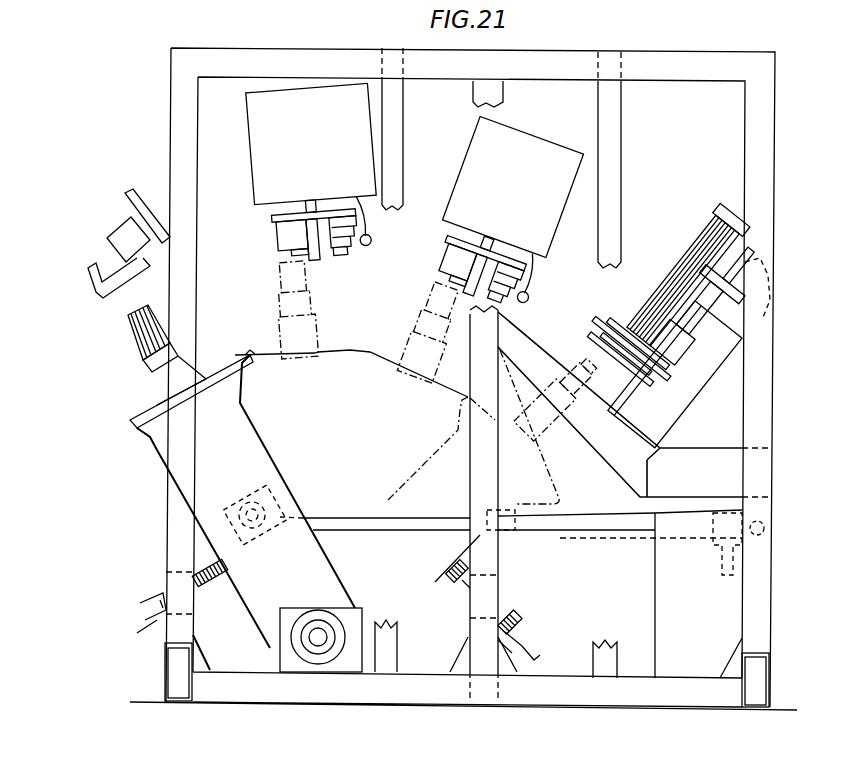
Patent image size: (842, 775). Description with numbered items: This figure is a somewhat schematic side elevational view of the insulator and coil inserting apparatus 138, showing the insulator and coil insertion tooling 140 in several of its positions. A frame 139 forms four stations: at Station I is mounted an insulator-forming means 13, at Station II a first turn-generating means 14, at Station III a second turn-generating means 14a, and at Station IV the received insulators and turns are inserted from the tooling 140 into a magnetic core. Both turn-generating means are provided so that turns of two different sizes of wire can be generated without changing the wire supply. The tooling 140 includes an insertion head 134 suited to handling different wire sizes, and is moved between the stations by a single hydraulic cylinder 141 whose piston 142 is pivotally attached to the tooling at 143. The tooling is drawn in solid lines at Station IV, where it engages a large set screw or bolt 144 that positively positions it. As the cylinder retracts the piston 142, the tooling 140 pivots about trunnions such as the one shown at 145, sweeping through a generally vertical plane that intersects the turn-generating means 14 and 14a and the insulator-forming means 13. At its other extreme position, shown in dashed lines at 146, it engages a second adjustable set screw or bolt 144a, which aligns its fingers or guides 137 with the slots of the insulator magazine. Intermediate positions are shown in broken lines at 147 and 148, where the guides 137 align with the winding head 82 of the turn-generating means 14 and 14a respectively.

The insulator-forming means 13 is at (727, 252).
The first turn-generating means 14 is at (434, 220).
The second turn-generating means 14a is at (350, 263).
The winding head 82 is at (310, 250).
The insertion head 134 is at (135, 340).
The fingers or guides 137 is at (152, 313).
The insulator and coil inserting apparatus 138 is at (263, 33).
The frame 139 is at (171, 108).
The insulator and coil insertion tooling 140 is at (146, 403).
The hydraulic cylinder 141 is at (592, 540).
The piston 142 is at (349, 518).
The pivotal attachment 143 is at (283, 497).
The set screw or bolt 144 is at (212, 584).
The second adjustable set screw or bolt 144a is at (516, 620).
The trunnion 145 is at (316, 642).
The tooling extreme position 146 is at (547, 469).
The tooling intermediate position 147 is at (386, 356).
The tooling intermediate position 148 is at (322, 349).